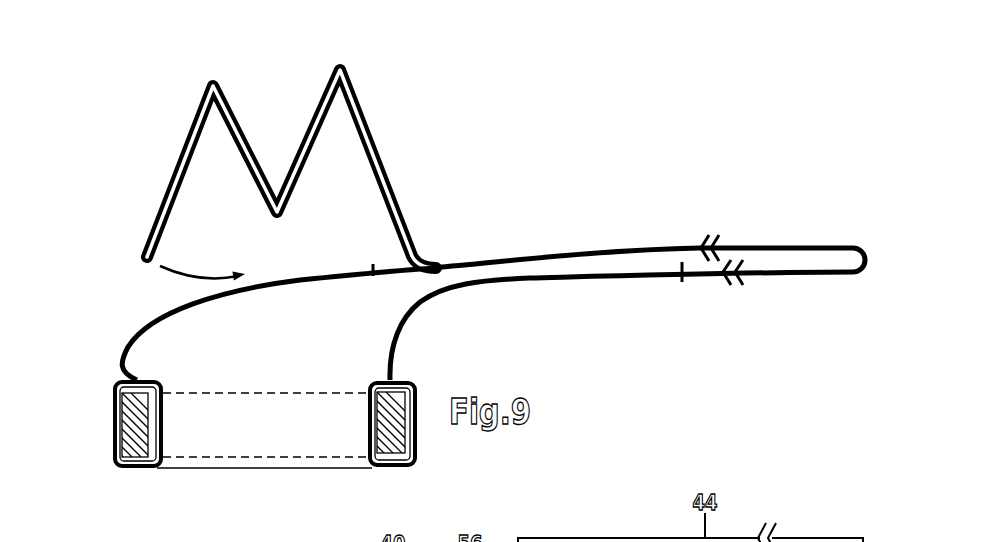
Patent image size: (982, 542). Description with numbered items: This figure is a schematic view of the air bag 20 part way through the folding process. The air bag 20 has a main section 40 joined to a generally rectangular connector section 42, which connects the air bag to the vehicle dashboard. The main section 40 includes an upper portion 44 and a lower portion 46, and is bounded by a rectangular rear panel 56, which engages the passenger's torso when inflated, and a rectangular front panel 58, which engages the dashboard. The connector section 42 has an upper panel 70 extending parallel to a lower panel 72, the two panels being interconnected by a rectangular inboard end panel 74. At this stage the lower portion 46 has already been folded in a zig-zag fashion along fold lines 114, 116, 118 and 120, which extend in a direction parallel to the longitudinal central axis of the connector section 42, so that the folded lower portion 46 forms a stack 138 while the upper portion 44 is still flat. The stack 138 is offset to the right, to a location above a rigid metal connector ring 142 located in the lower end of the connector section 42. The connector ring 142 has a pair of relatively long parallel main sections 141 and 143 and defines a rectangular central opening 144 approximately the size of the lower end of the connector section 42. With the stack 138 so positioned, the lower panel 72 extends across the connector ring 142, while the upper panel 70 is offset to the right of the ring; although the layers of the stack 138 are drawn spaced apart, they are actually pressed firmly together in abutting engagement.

The air bag 20 is at (540, 96).
The main section 40 is at (640, 242).
The connector section 42 is at (108, 354).
The upper portion 44 is at (497, 168).
The lower portion 46 is at (137, 65).
The rear panel 56 is at (555, 256).
The front panel 58 is at (370, 158).
The upper panel 70 is at (415, 320).
The lower panel 72 is at (180, 313).
The inboard end panel 74 is at (316, 330).
The fold line 114 is at (210, 80).
The fold line 116 is at (277, 200).
The fold line 118 is at (350, 58).
The fold line 120 is at (437, 264).
The stack 138 is at (146, 182).
The main section of connector ring 141 is at (117, 384).
The connector ring 142 is at (104, 430).
The main section of connector ring 143 is at (397, 432).
The central opening 144 is at (148, 467).